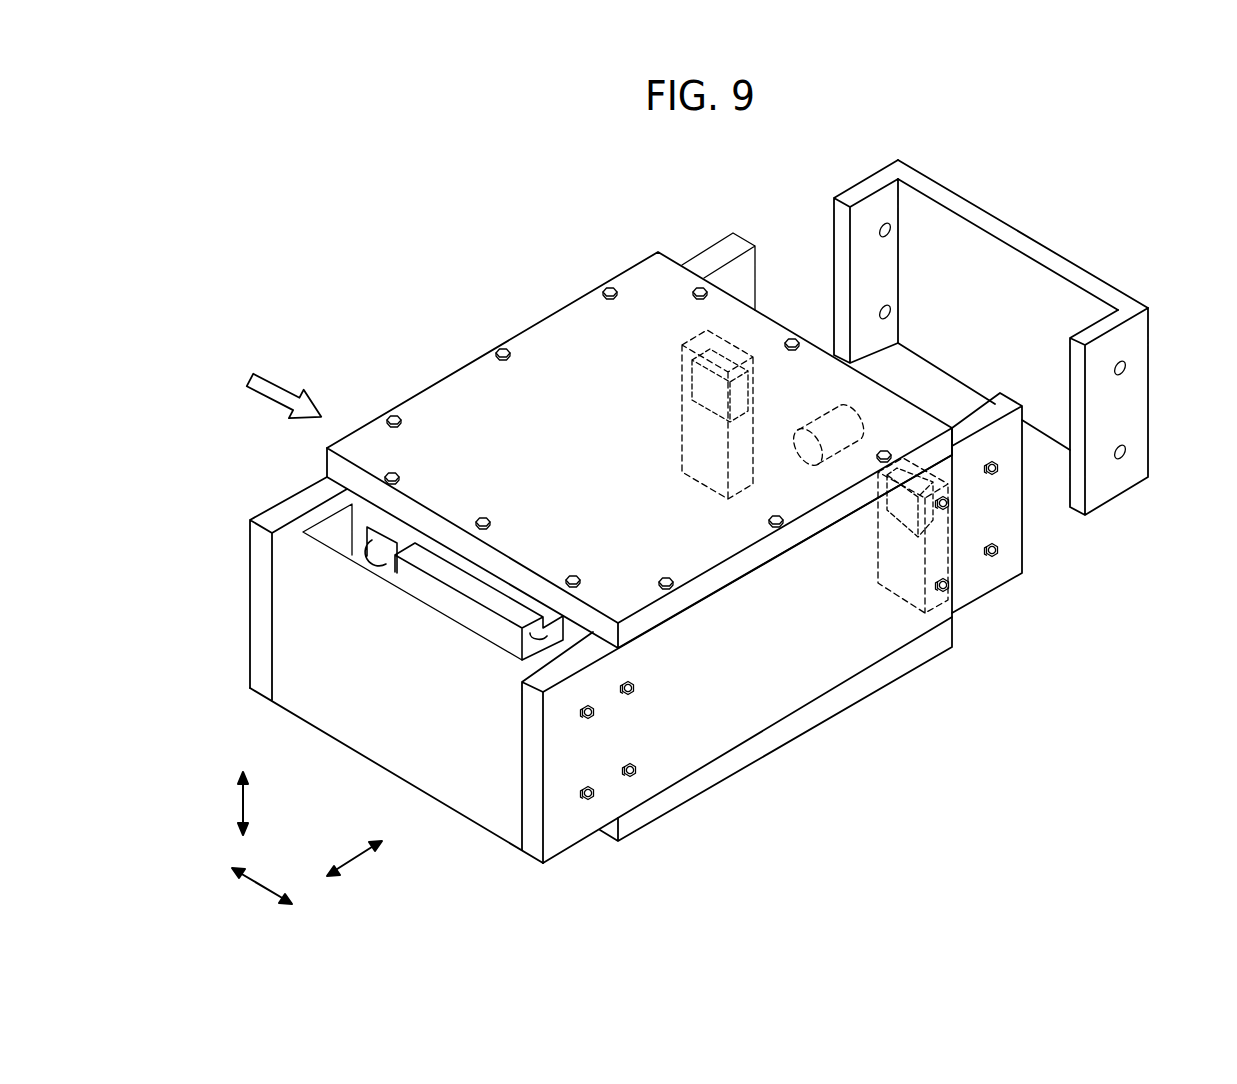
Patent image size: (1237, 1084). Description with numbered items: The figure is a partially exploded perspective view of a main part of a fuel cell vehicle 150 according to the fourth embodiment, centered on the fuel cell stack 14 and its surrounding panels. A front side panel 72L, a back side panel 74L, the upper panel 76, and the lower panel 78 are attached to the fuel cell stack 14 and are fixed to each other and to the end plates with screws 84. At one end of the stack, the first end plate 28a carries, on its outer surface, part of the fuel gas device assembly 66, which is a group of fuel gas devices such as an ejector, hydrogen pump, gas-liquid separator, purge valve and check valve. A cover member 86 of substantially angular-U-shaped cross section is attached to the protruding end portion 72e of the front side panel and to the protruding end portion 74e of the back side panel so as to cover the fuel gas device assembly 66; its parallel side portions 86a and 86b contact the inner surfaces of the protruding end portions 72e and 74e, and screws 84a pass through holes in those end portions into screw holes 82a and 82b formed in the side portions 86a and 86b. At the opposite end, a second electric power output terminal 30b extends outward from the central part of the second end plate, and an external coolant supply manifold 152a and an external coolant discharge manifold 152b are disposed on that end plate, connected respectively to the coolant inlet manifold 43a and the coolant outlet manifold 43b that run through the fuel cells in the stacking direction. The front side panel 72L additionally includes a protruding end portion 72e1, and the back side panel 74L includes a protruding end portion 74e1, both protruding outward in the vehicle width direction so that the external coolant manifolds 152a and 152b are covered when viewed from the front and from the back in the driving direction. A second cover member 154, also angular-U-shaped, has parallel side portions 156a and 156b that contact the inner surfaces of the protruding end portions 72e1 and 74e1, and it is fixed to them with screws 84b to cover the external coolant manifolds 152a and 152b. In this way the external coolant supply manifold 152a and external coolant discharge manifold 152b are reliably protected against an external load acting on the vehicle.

The fuel cell stack 14 is at (574, 338).
The fuel cell vehicle 150 is at (820, 143).
The cover member 154 is at (1082, 258).
The side portion 156a is at (855, 190).
The side portion 156b is at (1118, 383).
The screw hole 82a is at (885, 240).
The screw hole 82b is at (1124, 457).
The screws 84 is at (793, 335).
The screws 84a is at (597, 797).
The screws 84b is at (1002, 553).
The upper panel 76 is at (432, 400).
The protruding end portion 72e1 is at (700, 262).
The protruding end portion 72e is at (325, 530).
The front side panel 72L is at (246, 670).
The back side panel 74L is at (777, 708).
The protruding end portion 74e is at (568, 828).
The protruding end portion 74e1 is at (983, 588).
The lower panel 78 is at (633, 840).
The cover member 86 is at (445, 806).
The side portion 86a is at (320, 507).
The side portion 86b is at (545, 660).
The fuel gas device assembly 66 is at (466, 610).
The first end plate 28a is at (360, 518).
The second electric power output terminal 30b is at (820, 417).
The coolant inlet manifold 43a is at (690, 380).
The coolant outlet manifold 43b is at (900, 522).
The external coolant supply manifold 152a is at (680, 443).
The external coolant discharge manifold 152b is at (876, 590).